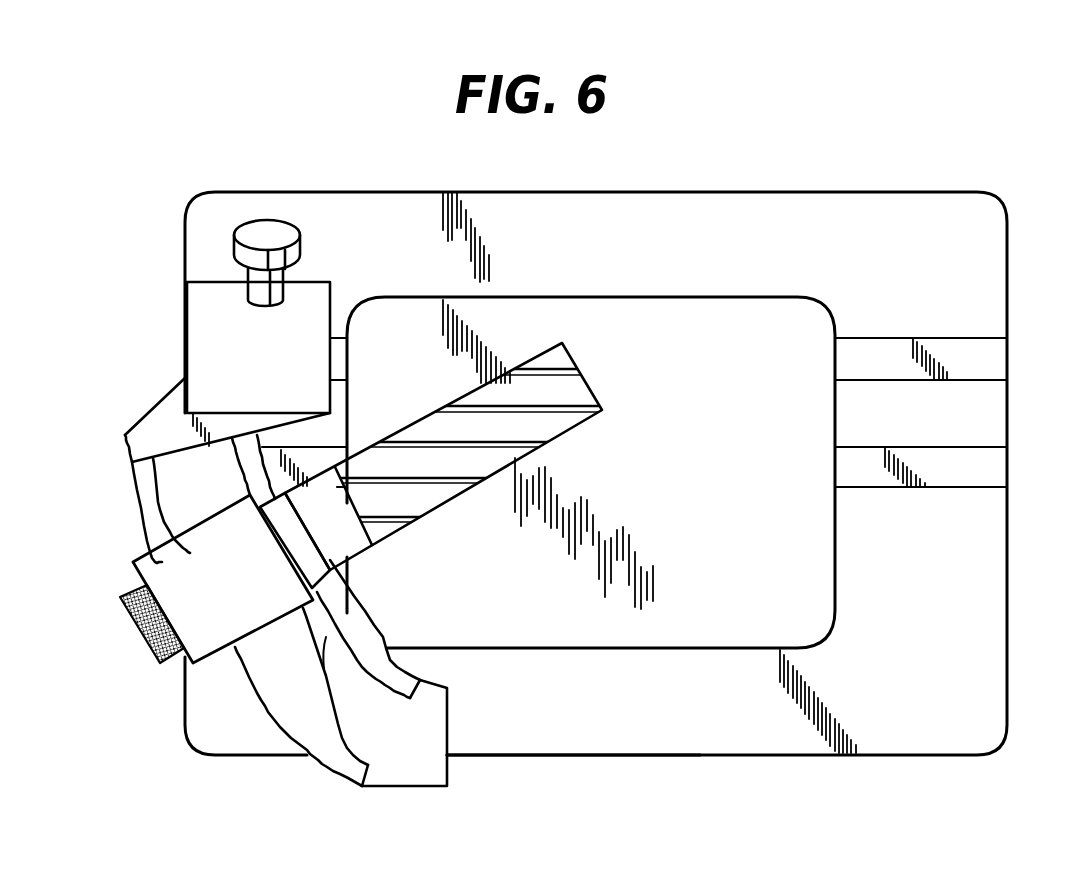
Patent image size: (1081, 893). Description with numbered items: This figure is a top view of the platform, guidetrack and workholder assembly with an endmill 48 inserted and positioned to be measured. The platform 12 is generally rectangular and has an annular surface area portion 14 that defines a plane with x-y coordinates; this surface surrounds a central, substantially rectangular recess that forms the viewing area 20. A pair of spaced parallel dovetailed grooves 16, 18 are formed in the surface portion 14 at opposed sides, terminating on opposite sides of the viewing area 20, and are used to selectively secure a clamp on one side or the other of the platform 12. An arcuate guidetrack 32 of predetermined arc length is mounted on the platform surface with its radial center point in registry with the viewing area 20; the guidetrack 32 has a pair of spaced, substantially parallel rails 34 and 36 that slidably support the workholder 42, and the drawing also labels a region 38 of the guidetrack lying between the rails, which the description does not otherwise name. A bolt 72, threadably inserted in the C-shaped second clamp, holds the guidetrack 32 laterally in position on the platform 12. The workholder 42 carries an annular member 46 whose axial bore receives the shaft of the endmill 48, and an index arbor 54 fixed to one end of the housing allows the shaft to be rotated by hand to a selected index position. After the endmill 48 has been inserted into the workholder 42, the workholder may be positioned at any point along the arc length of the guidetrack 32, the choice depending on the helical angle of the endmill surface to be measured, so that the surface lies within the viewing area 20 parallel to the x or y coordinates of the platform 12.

The platform 12 is at (950, 600).
The annular surface area portion 14 is at (893, 737).
The dovetailed groove 16 is at (991, 467).
The dovetailed groove 18 is at (995, 359).
The viewing area 20 is at (713, 328).
The arcuate guidetrack 32 is at (180, 487).
The rail 34 is at (333, 762).
The rail 36 is at (402, 675).
The groove 38 is at (278, 688).
The workholder 42 is at (168, 563).
The annular member 46 is at (310, 562).
The endmill 48 is at (543, 428).
The index arbor 54 is at (122, 612).
The bolt 72 is at (262, 232).